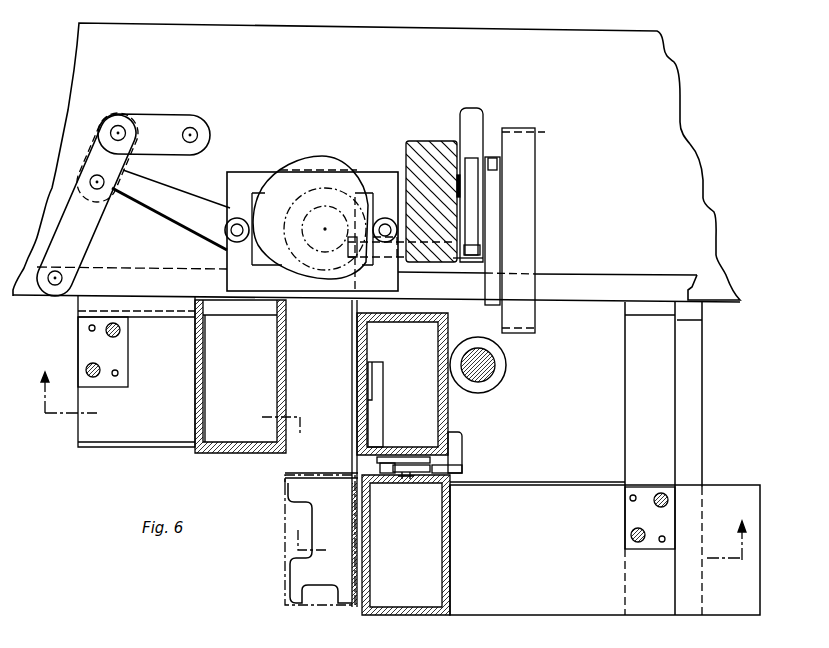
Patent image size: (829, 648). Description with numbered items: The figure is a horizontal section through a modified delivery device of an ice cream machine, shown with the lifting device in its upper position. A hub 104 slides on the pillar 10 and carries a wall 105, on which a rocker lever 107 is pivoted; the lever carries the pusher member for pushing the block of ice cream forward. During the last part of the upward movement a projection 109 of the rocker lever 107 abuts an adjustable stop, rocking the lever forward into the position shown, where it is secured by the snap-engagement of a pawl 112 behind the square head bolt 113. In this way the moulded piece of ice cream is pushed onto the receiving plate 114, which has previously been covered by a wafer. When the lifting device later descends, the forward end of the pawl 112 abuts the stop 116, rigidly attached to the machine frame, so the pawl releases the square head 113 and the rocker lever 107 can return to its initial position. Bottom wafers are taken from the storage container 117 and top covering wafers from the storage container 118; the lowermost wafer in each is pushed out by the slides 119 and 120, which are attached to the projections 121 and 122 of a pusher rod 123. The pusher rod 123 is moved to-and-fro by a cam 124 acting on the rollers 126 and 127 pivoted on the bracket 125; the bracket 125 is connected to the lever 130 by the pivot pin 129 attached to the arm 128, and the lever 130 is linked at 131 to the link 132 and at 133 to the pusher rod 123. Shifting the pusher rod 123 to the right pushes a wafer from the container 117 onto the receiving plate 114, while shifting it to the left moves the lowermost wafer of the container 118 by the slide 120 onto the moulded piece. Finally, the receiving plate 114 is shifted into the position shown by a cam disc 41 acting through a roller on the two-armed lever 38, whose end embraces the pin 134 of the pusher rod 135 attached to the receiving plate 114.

The pillar 10 is at (481, 373).
The two-armed lever 38 is at (470, 158).
The cam disc 41 is at (492, 153).
The hub 104 is at (506, 366).
The wall 105 is at (448, 327).
The rocker lever 107 is at (372, 370).
The projection 109 is at (407, 460).
The pawl 112 is at (435, 470).
The square head bolt 113 is at (410, 479).
The receiving plate 114 is at (297, 571).
The stop 116 is at (382, 468).
The storage container 117 is at (242, 447).
The storage container 118 is at (428, 614).
The slide 119 is at (153, 432).
The slide 120 is at (518, 606).
The projection 121 is at (128, 300).
The projection 122 is at (627, 452).
The pusher rod 123 is at (160, 272).
The cam 124 is at (316, 163).
The bracket 125 is at (235, 178).
The roller 126 is at (386, 218).
The roller 127 is at (240, 219).
The arm 128 is at (166, 196).
The pivot pin 129 is at (93, 178).
The lever 130 is at (88, 231).
The pivot (link connection) 131 is at (116, 127).
The link 132 is at (174, 118).
The pivot (pusher rod connection) 133 is at (55, 287).
The pin 134 is at (480, 244).
The pusher rod 135 is at (352, 310).